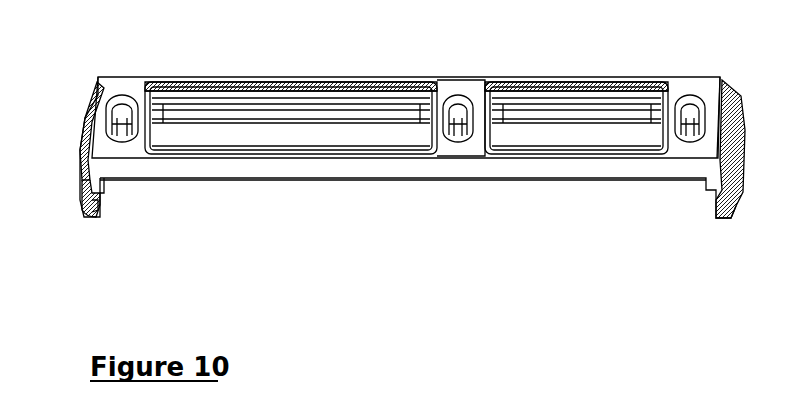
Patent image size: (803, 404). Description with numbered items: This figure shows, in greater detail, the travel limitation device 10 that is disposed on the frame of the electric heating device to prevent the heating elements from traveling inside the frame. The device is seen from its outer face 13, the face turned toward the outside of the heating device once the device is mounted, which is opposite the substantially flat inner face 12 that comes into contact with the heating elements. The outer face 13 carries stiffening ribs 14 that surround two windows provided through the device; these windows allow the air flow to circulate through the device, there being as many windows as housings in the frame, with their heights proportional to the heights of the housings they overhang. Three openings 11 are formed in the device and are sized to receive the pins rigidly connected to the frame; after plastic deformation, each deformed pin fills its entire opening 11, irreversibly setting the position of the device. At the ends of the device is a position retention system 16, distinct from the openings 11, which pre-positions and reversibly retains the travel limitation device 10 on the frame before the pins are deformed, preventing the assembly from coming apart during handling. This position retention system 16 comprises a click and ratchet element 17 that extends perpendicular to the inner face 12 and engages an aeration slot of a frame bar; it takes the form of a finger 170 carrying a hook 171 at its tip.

The travel limitation device 10 is at (686, 85).
The opening 11 is at (128, 100).
The inner face 12 is at (575, 197).
The outer face 13 is at (456, 80).
The stiffening ribs 14 is at (285, 88).
The position retention system 16 is at (72, 132).
The click and ratchet element 17 is at (82, 152).
The finger 170 is at (80, 210).
The hook 171 is at (102, 216).